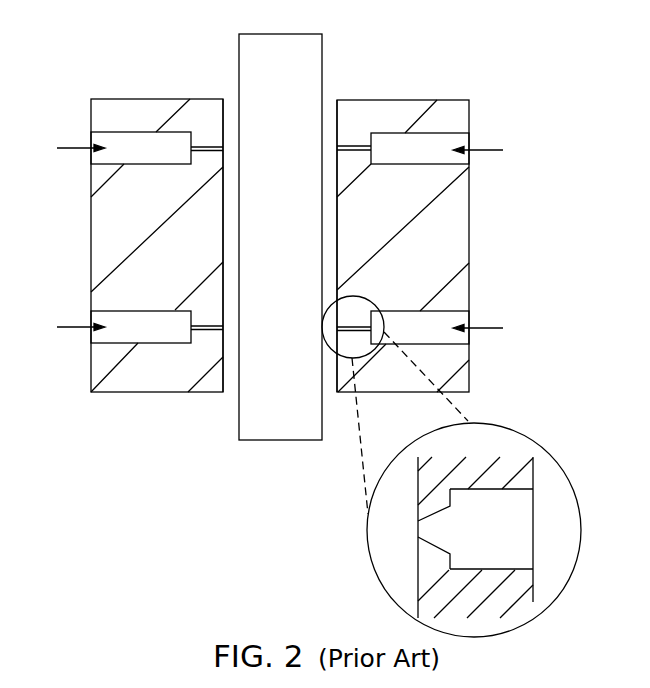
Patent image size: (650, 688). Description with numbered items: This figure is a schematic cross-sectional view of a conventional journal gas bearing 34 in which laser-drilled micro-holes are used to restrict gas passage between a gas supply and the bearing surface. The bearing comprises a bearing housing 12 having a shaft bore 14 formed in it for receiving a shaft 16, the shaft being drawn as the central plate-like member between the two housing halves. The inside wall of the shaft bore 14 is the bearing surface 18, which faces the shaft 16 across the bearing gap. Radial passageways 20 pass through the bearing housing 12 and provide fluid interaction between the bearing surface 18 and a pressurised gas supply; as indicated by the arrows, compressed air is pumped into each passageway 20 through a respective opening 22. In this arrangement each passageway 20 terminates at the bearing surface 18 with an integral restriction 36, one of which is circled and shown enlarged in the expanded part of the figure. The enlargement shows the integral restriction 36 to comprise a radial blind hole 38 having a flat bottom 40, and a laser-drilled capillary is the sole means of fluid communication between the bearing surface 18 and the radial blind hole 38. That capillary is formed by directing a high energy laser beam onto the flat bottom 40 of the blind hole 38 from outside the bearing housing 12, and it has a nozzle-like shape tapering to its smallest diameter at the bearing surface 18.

The bearing housing 12 is at (443, 238).
The shaft bore 14 is at (230, 387).
The shaft 16 is at (310, 55).
The bearing surface 18 is at (337, 123).
The radial passageway 20 is at (145, 148).
The opening 22 is at (93, 158).
The journal gas bearing 34 is at (230, 99).
The integral restriction 36 is at (352, 316).
The radial blind hole 38 is at (520, 510).
The flat bottom 40 is at (452, 497).